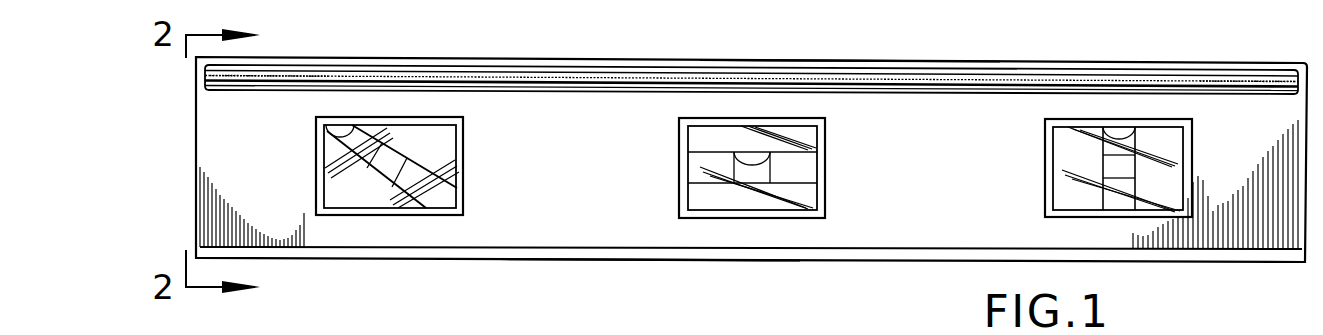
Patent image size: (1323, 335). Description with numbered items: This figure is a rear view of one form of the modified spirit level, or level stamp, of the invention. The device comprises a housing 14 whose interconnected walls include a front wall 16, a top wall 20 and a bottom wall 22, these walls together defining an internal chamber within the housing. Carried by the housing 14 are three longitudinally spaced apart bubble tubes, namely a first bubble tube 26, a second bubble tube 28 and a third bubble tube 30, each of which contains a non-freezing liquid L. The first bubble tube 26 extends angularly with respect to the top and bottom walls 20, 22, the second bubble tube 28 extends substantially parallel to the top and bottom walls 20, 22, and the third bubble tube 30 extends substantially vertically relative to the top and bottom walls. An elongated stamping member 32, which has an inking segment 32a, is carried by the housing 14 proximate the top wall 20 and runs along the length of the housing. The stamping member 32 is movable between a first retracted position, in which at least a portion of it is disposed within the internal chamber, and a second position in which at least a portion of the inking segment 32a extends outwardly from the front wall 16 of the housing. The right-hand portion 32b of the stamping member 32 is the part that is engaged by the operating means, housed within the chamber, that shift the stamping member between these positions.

The housing 14 is at (516, 53).
The front wall 16 is at (751, 159).
The top wall 20 is at (919, 61).
The bottom wall 22 is at (670, 260).
The first bubble tube 26 is at (403, 158).
The second bubble tube 28 is at (698, 160).
The third bubble tube 30 is at (1100, 167).
The stamping member 32 is at (690, 74).
The inking segment 32a is at (1227, 81).
The right-hand portion of the stamping member 32b is at (378, 78).
The non-freezing liquid L is at (438, 198).